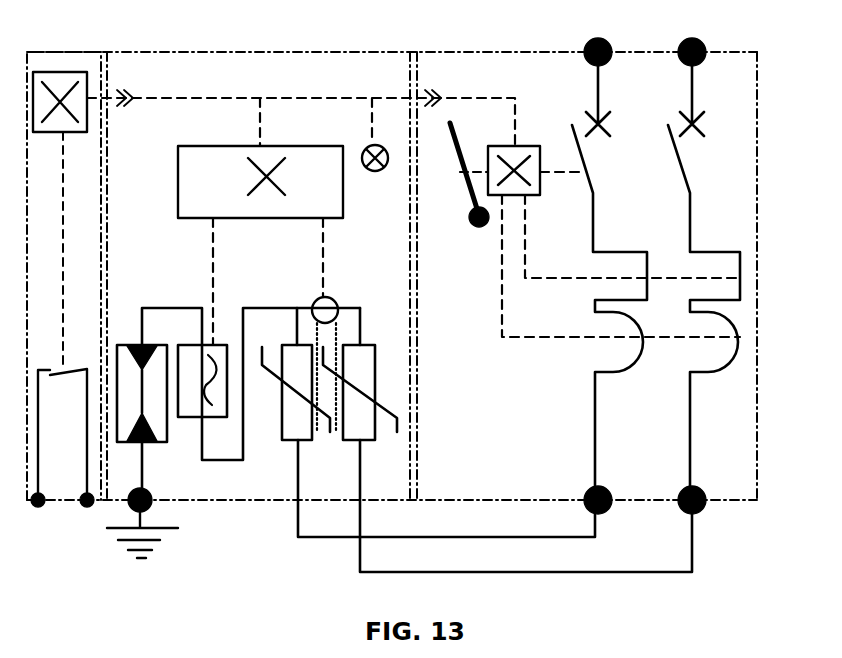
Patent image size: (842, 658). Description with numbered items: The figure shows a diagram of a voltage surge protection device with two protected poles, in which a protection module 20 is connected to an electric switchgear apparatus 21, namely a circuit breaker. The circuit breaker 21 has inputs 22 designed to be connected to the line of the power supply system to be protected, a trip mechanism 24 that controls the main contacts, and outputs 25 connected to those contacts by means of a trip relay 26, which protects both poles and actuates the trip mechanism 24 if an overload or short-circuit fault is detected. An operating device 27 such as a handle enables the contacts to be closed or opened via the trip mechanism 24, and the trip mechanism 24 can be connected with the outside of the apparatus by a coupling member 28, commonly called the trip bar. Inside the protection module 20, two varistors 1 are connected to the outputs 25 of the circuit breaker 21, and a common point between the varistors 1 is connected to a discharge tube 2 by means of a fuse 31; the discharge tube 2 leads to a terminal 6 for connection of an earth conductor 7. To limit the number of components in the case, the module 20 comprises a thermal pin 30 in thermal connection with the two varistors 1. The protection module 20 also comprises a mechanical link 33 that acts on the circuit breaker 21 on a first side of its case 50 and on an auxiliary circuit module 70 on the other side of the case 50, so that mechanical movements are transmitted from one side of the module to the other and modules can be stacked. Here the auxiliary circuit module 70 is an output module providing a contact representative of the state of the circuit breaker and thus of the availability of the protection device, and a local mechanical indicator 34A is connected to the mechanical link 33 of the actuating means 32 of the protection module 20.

The auxiliary circuit module 70 is at (67, 52).
The case 50 is at (170, 82).
The protection module 20 is at (192, 52).
The actuating means 32 is at (218, 146).
The mechanical link 33 is at (312, 107).
The local mechanical indicator 34A is at (367, 143).
The coupling member 28 is at (441, 98).
The operating device 27 is at (470, 155).
The trip mechanism 24 is at (528, 160).
The electric switchgear apparatus 21 is at (563, 52).
The inputs 22 is at (684, 40).
The discharge tube 2 is at (121, 345).
The fuse 31 is at (190, 345).
The varistor 1 is at (293, 367).
The thermal pin 30 is at (319, 300).
The trip relay 26 is at (706, 337).
The outputs 25 is at (606, 510).
The terminal 6 is at (152, 504).
The earth conductor 7 is at (150, 527).